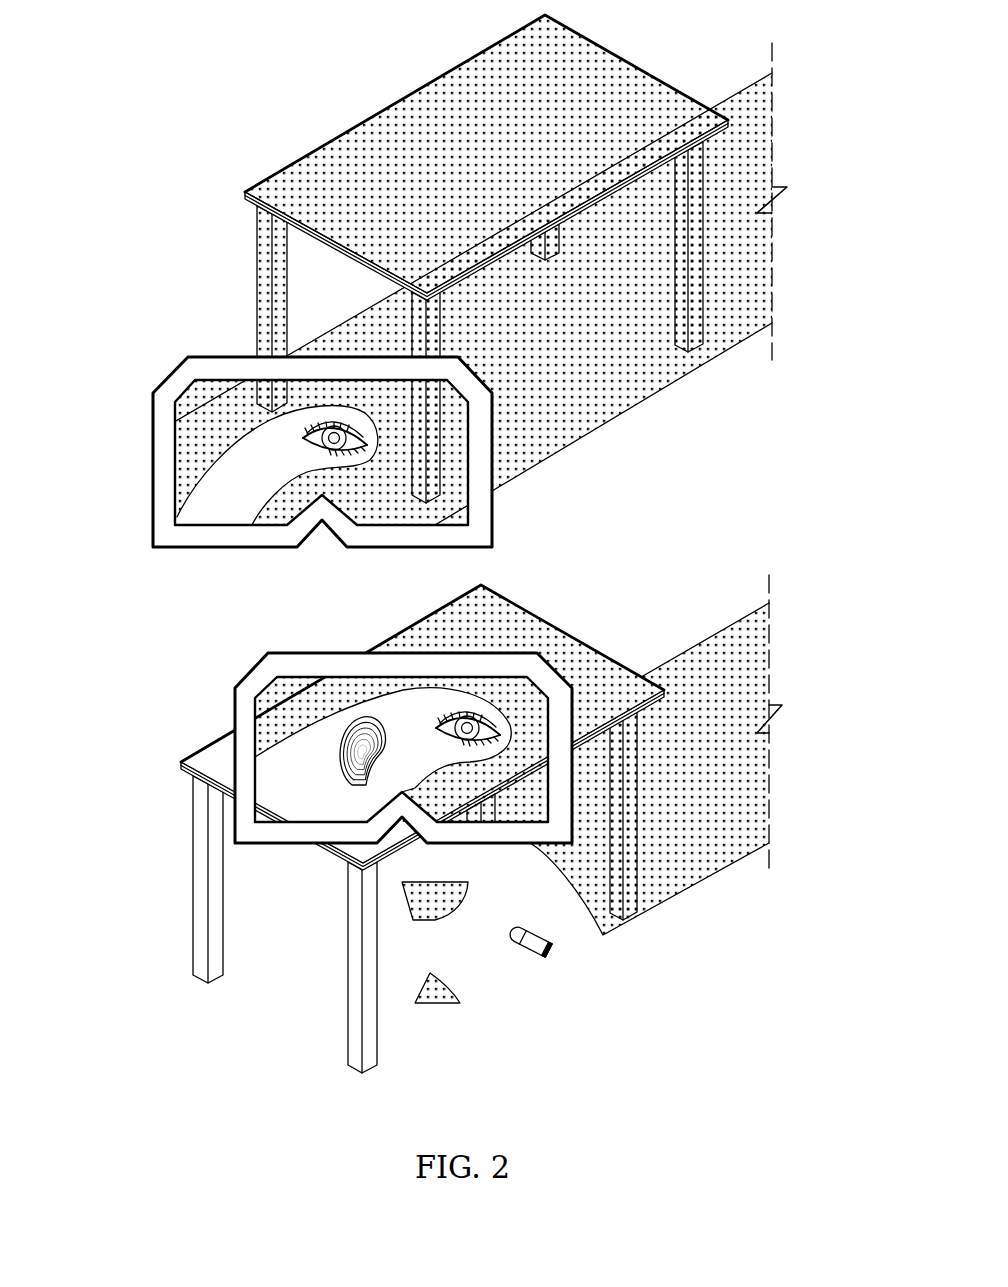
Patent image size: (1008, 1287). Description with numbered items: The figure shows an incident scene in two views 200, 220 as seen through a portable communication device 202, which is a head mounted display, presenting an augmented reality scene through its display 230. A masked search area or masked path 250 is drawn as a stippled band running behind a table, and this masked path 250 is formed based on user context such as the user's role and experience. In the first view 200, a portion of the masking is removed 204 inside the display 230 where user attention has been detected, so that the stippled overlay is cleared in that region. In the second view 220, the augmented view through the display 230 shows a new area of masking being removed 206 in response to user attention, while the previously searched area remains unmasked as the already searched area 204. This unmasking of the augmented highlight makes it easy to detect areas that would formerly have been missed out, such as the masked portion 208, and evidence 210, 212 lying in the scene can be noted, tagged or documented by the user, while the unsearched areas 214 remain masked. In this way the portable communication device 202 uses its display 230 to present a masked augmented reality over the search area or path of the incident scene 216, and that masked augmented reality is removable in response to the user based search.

The view 200 is at (152, 76).
The portable communication device 202 is at (362, 600).
The unmasked area 204 is at (136, 886).
The new area masking being removed 206 is at (378, 702).
The masked portion 208 is at (635, 1105).
The evidence 210 is at (340, 770).
The evidence 212 is at (528, 950).
The unsearched areas 214 is at (837, 994).
The incident scene 216 is at (453, 473).
The view 220 is at (174, 656).
The display 230 is at (255, 731).
The masked path 250 is at (767, 125).